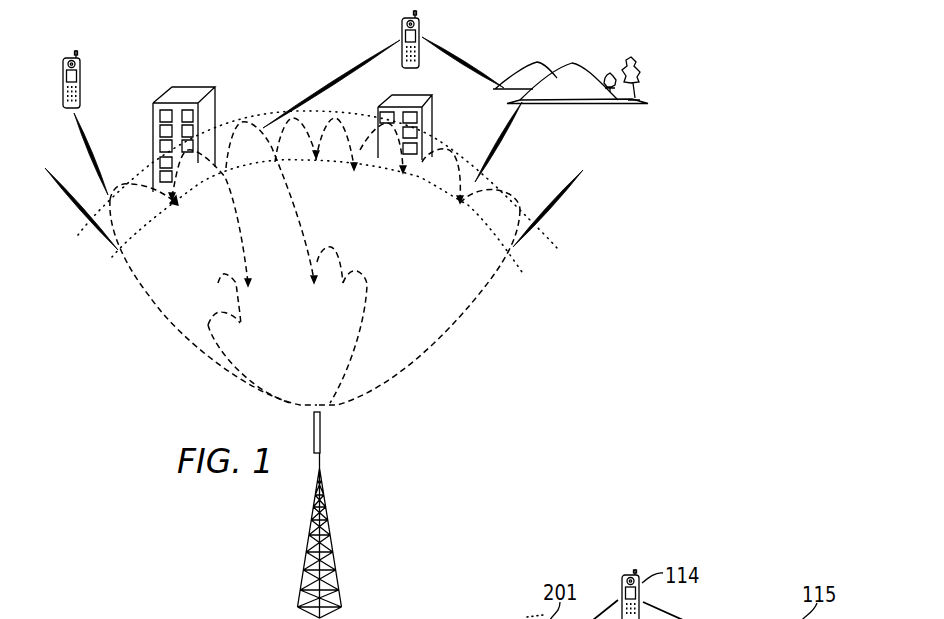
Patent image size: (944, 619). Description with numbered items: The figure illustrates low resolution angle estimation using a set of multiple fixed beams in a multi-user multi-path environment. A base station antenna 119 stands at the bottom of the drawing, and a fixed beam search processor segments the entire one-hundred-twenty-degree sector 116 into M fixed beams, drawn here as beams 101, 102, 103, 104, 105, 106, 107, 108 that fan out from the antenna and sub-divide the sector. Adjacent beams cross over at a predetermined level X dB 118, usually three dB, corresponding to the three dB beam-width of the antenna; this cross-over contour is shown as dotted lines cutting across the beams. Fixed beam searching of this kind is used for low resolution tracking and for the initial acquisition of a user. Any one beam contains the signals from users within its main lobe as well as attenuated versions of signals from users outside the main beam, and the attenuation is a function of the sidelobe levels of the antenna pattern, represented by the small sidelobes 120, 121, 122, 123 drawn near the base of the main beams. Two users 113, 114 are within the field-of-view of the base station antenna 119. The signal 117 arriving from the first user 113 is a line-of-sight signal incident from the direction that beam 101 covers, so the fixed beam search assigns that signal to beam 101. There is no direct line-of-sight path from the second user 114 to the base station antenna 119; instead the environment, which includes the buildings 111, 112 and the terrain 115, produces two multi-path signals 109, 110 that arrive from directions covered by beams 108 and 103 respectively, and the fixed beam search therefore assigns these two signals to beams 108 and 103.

The fixed beam 101 is at (143, 209).
The fixed beam 102 is at (196, 180).
The fixed beam 103 is at (250, 160).
The fixed beam 104 is at (301, 155).
The fixed beam 105 is at (335, 150).
The fixed beam 106 is at (393, 158).
The fixed beam 107 is at (433, 178).
The fixed beam 108 is at (497, 228).
The multi-path signal 109 is at (507, 132).
The multi-path signal 110 is at (336, 80).
The building 111 is at (428, 128).
The building 112 is at (188, 95).
The user 113 is at (75, 54).
The user 114 is at (402, 26).
The terrain 115 is at (582, 64).
The sector 116 is at (72, 200).
The LOS signal 117 is at (85, 130).
The cross-over level X dB 118 is at (533, 250).
The base station antenna 119 is at (305, 547).
The sidelobe 120 is at (217, 315).
The sidelobe 121 is at (227, 275).
The sidelobe 122 is at (337, 265).
The sidelobe 123 is at (365, 287).